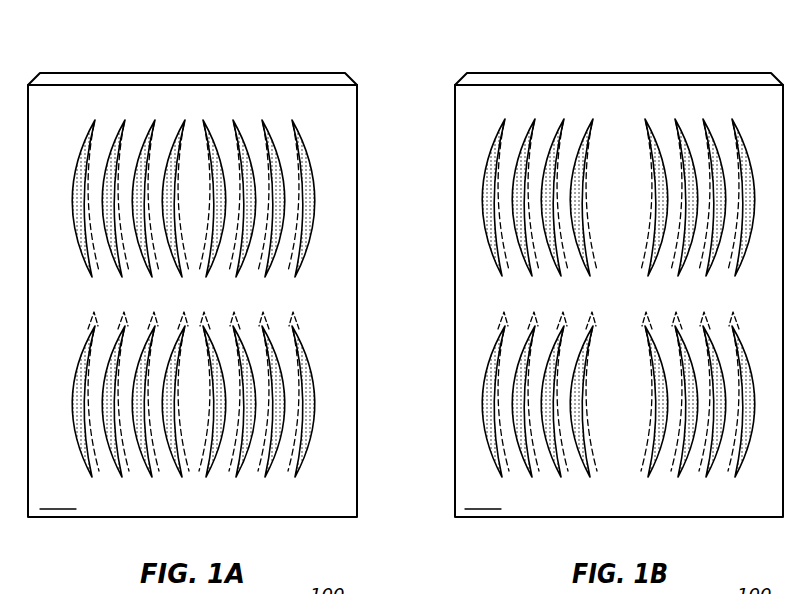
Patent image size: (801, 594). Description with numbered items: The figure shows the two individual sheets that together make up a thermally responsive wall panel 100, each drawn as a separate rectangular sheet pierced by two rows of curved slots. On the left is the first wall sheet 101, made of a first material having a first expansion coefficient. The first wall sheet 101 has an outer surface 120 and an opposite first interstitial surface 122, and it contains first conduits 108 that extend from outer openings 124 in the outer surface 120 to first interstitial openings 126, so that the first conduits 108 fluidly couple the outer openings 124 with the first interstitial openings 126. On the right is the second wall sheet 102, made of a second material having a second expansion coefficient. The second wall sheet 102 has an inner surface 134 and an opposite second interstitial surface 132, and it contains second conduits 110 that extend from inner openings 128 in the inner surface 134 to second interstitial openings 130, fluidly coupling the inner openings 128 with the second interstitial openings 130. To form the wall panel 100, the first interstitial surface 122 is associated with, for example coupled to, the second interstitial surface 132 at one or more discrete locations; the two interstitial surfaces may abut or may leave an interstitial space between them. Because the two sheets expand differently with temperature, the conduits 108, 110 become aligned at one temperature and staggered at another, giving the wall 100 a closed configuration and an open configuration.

In FIG. 1A, the thermally responsive wall panel 100 is at (275, 73).
In FIG. 1B, the thermally responsive wall panel 100 is at (698, 73).
In FIG. 1A, the first wall sheet 101 is at (58, 498).
In FIG. 1B, the second wall sheet 102 is at (483, 498).
In FIG. 1A, the first conduits 108 is at (318, 177).
In FIG. 1B, the second conduits 110 is at (488, 163).
In FIG. 1A, the outer surface 120 is at (332, 488).
In FIG. 1A, the first interstitial surface 122 is at (330, 360).
In FIG. 1A, the outer openings 124 is at (312, 227).
In FIG. 1A, the first interstitial openings 126 is at (152, 119).
In FIG. 1B, the inner openings 128 is at (494, 256).
In FIG. 1B, the second interstitial openings 130 is at (647, 119).
In FIG. 1B, the second interstitial surface 132 is at (467, 368).
In FIG. 1B, the inner surface 134 is at (575, 493).